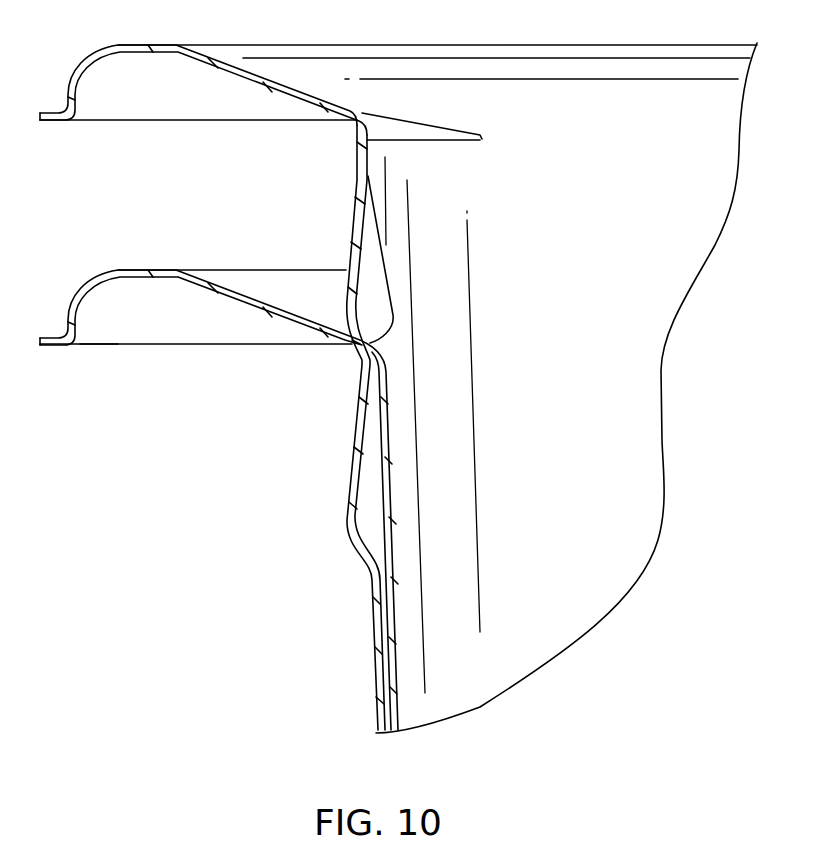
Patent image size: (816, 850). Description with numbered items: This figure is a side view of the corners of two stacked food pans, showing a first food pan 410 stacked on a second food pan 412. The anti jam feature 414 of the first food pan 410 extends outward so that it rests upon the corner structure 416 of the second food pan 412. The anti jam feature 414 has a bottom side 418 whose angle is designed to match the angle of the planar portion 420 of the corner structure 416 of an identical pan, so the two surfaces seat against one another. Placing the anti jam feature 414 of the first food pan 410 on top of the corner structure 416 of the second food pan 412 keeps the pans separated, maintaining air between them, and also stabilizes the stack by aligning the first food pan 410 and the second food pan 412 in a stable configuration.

The first food pan 410 is at (298, 76).
The second food pan 412 is at (122, 324).
The anti jam feature 414 is at (345, 296).
The corner structure 416 is at (275, 288).
The bottom side 418 is at (380, 351).
The planar portion 420 is at (358, 356).